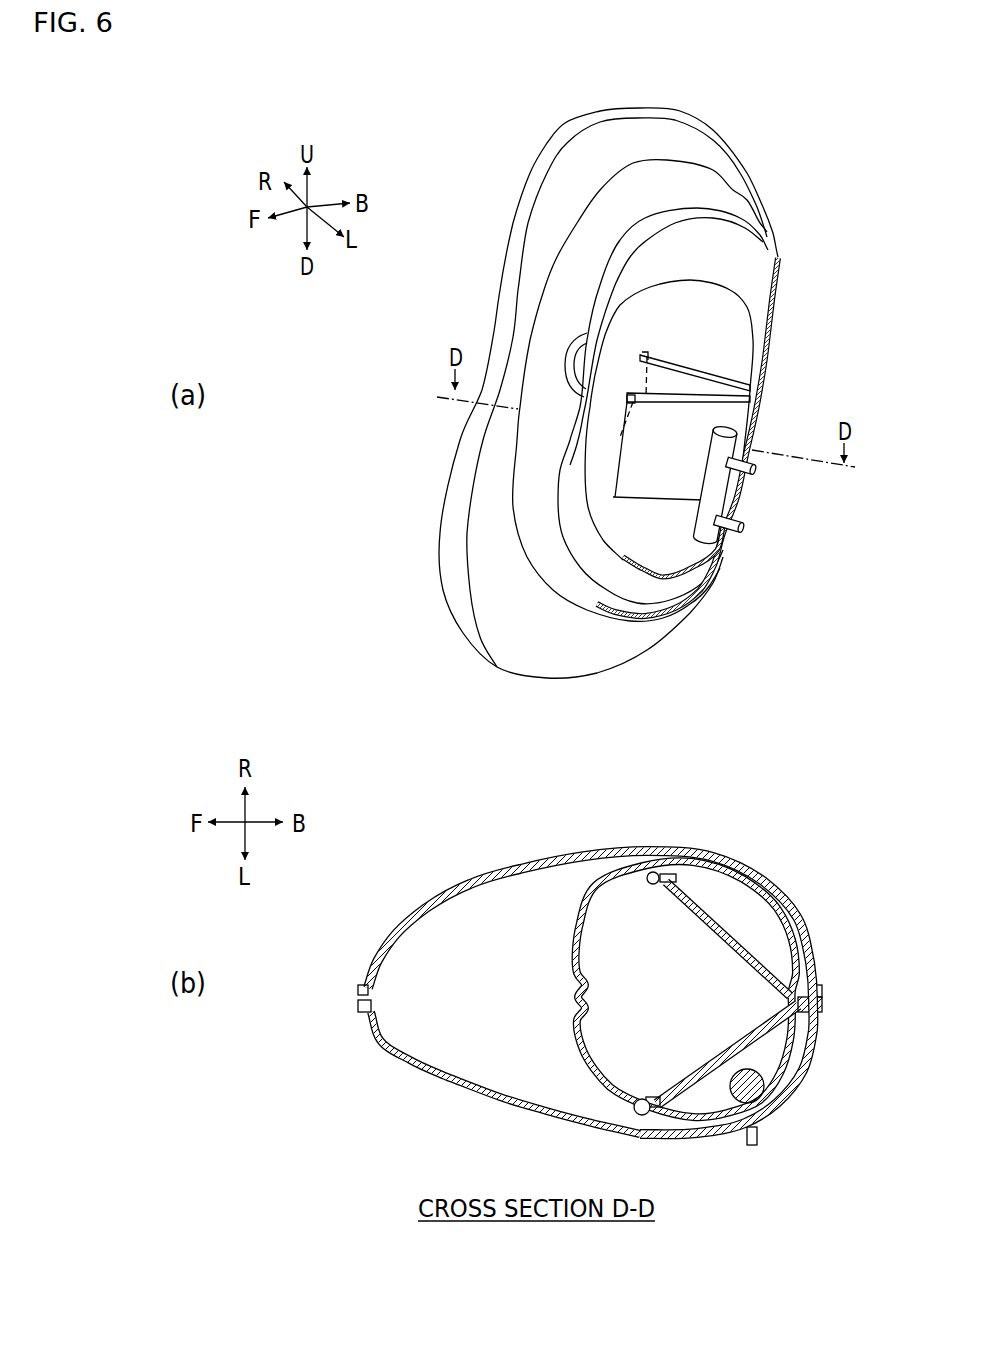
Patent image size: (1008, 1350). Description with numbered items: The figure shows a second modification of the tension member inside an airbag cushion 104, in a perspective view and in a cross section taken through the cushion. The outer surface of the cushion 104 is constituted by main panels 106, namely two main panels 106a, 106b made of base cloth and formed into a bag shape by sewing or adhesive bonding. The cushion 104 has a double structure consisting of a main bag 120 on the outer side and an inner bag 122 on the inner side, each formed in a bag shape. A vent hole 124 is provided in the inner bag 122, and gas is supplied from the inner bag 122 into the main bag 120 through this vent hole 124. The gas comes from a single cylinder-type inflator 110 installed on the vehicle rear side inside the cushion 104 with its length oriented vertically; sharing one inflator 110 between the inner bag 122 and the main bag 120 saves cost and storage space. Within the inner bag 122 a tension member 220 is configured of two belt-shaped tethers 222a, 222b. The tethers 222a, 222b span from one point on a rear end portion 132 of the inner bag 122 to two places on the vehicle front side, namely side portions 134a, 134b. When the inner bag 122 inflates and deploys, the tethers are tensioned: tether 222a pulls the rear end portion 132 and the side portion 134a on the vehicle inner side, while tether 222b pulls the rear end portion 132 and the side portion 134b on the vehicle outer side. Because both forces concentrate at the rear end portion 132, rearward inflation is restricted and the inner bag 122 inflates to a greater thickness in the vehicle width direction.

The cushion 104 is at (486, 139).
The main bag 120 is at (553, 303).
The inner bag 122 is at (745, 263).
The vent hole 124 is at (568, 350).
The tension member 220 is at (753, 696).
The tether 222a is at (717, 410).
The tether 222b is at (687, 388).
The inflator 110 is at (737, 431).
The main panels 106 is at (522, 776).
The main panel 106a is at (503, 497).
The main panel 106b is at (462, 421).
The rear end portion 132 is at (820, 995).
The side portion 134a is at (632, 1114).
The side portion 134b is at (658, 872).